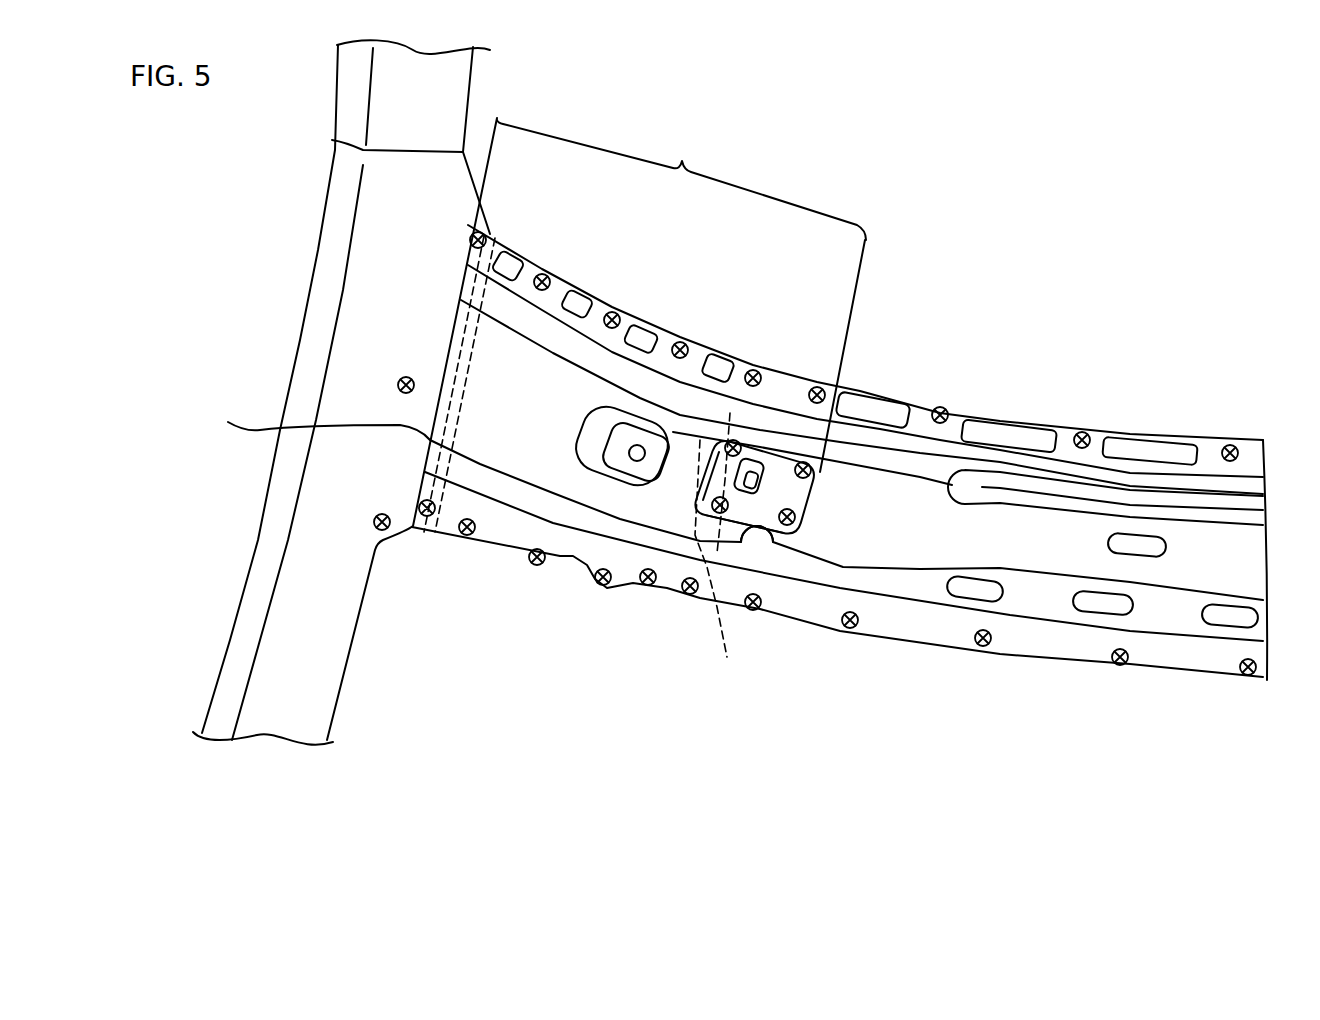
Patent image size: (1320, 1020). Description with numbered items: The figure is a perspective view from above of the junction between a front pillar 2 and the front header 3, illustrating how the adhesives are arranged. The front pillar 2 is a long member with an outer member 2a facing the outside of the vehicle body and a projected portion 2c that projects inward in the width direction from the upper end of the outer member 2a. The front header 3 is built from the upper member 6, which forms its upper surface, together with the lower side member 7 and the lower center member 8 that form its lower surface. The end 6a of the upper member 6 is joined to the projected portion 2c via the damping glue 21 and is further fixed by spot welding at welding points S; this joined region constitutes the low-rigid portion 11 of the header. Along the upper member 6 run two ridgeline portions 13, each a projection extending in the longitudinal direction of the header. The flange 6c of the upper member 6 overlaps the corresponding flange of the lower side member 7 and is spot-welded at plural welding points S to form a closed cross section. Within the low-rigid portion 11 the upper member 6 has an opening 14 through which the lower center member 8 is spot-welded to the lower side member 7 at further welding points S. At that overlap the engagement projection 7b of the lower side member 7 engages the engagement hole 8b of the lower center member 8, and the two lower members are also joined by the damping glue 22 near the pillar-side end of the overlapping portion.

The front pillar 2 is at (265, 652).
The outer member 2a is at (315, 342).
The projected portion 2c is at (481, 233).
The front header 3 is at (1243, 705).
The upper member 6 is at (878, 487).
The end of the upper member 6a is at (729, 502).
The flange 6c is at (1165, 443).
The lower side member 7 is at (708, 440).
The engagement projection 7b is at (752, 456).
The lower center member 8 is at (783, 455).
The engagement hole 8b is at (760, 492).
The low-rigid portion 11 is at (681, 296).
The ridgeline portion 13 is at (560, 342).
The opening 14 is at (772, 548).
The damping glue 21 is at (443, 343).
The damping glue 22 is at (718, 551).
The welding point S is at (488, 238).